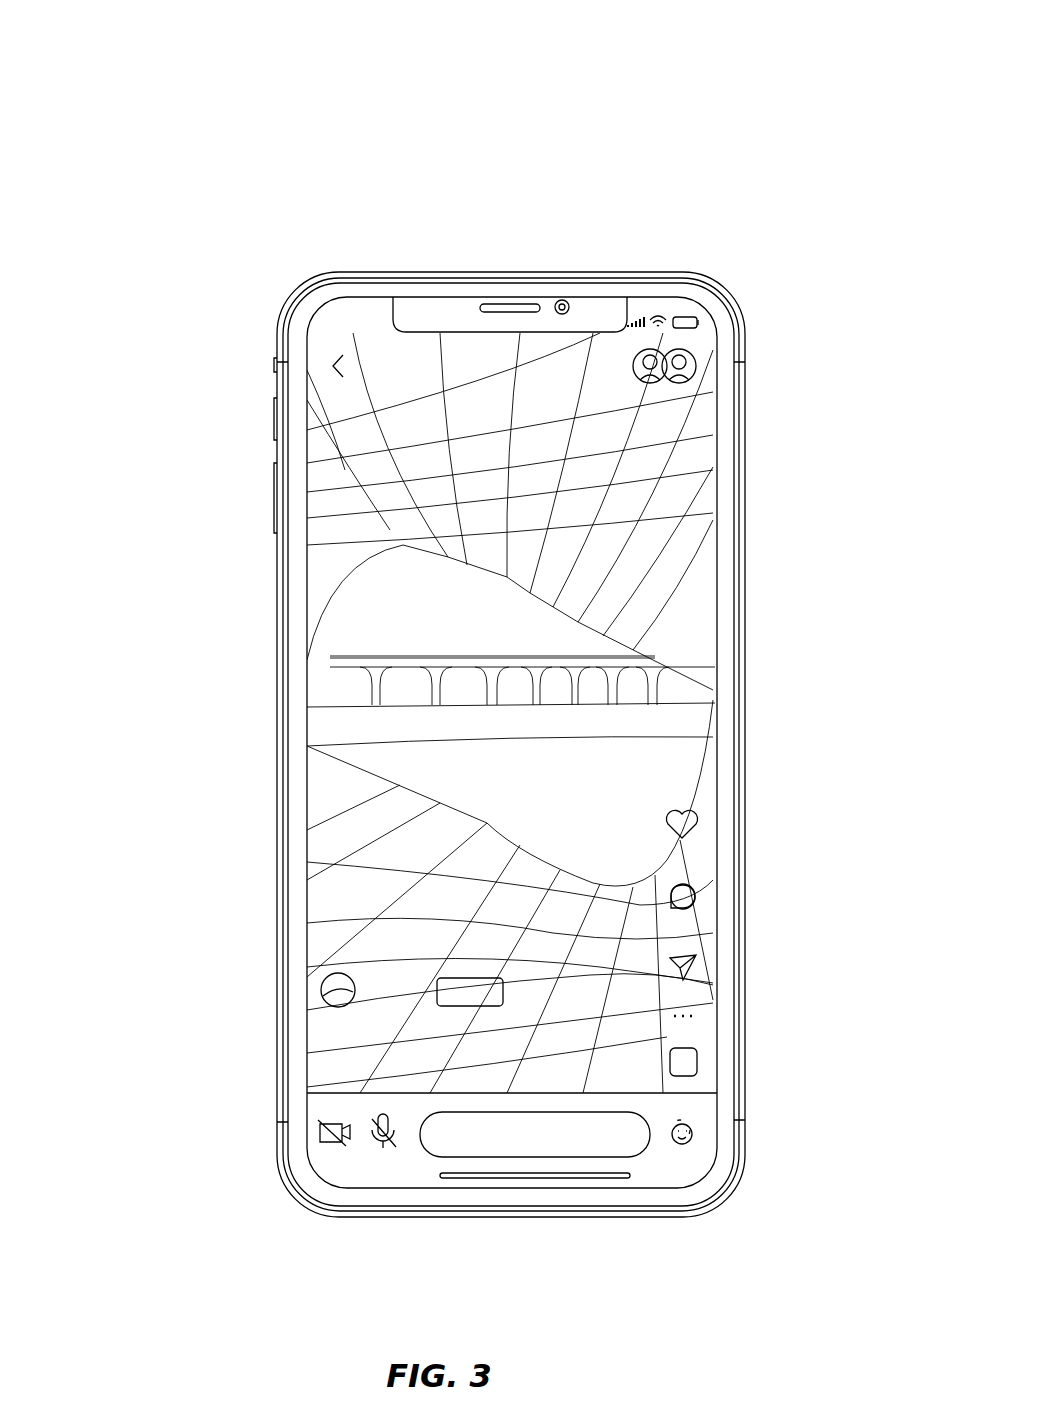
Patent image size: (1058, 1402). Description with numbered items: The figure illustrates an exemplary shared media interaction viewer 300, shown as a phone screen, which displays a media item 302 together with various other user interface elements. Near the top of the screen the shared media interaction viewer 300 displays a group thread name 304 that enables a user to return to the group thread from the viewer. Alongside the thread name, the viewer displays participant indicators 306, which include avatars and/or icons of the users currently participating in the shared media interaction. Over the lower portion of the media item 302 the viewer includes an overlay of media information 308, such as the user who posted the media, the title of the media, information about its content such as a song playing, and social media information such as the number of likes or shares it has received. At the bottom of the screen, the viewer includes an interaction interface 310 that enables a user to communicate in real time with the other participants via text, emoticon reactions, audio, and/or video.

The shared media interaction viewer 300 is at (160, 200).
The media item 302 is at (424, 773).
The group thread name 304 is at (350, 390).
The participant indicators 306 is at (712, 366).
The media information 308 is at (248, 1095).
The interaction interface 310 is at (250, 1150).